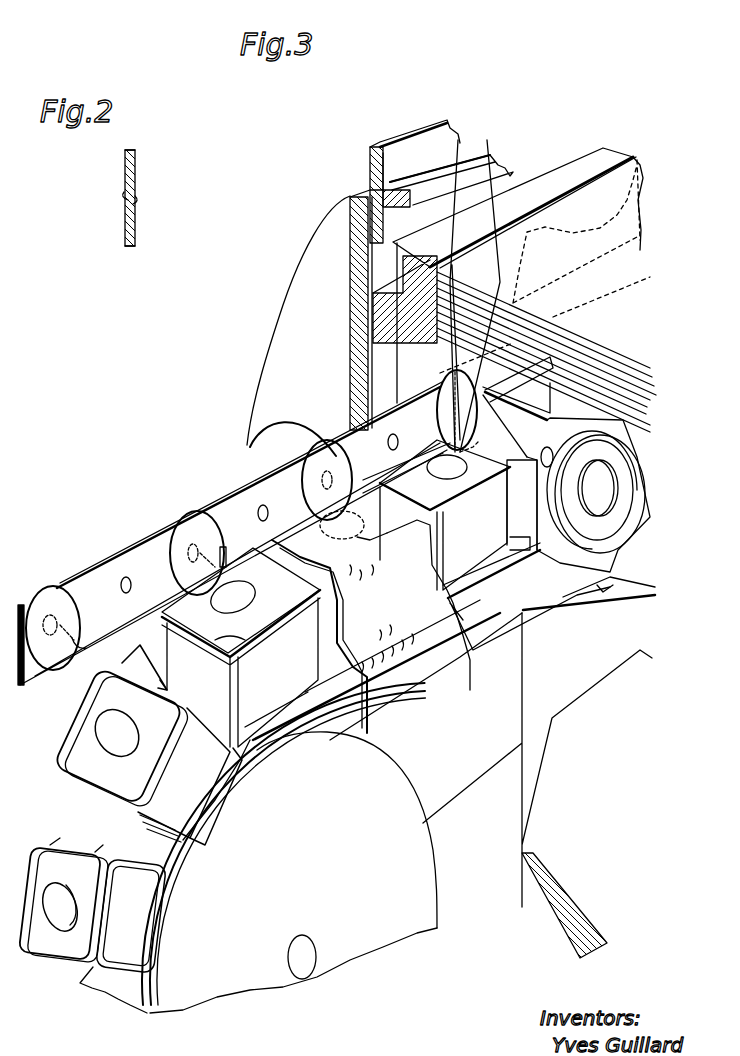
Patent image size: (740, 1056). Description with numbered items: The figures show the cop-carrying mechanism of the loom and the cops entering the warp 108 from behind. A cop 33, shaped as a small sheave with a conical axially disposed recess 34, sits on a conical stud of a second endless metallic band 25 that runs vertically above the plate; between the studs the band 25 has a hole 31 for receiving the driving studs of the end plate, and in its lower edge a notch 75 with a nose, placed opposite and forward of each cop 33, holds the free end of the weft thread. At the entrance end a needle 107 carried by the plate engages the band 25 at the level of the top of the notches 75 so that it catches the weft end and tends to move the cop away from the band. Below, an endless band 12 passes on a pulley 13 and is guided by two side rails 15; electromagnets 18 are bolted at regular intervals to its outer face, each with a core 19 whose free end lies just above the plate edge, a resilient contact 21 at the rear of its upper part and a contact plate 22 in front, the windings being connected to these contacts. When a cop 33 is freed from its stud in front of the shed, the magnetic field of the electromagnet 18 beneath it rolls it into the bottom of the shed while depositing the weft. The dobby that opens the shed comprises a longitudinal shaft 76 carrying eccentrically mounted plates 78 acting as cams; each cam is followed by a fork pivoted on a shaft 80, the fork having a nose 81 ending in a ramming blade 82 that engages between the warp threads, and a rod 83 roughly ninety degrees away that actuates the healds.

In FIG. 3, the endless band 12 is at (172, 870).
In FIG. 3, the pulley 13 is at (430, 912).
In FIG. 3, the side rail 15 is at (358, 712).
In FIG. 3, the electro-magnet 18 is at (257, 720).
In FIG. 3, the core 19 is at (362, 533).
In FIG. 3, the resilient contact 21 is at (144, 658).
In FIG. 3, the contact plate 22 is at (250, 640).
In FIG. 3, the second endless metallic band 25 is at (233, 510).
In FIG. 3, the hole 31 is at (127, 577).
In FIG. 2, the cop 33 is at (136, 172).
In FIG. 3, the cop 33 is at (188, 517).
In FIG. 2, the conical axially disposed recess 34 is at (134, 204).
In FIG. 3, the notch 75 is at (82, 645).
In FIG. 3, the longitudinal shaft 76 is at (597, 512).
In FIG. 3, the eccentrically mounted plate 78 is at (613, 537).
In FIG. 3, the shaft 80 is at (551, 450).
In FIG. 3, the nose 81 is at (507, 410).
In FIG. 3, the ramming blade 82 is at (483, 397).
In FIG. 3, the rod 83 is at (552, 404).
In FIG. 3, the needle 107 is at (350, 424).
In FIG. 3, the warp 108 is at (487, 152).